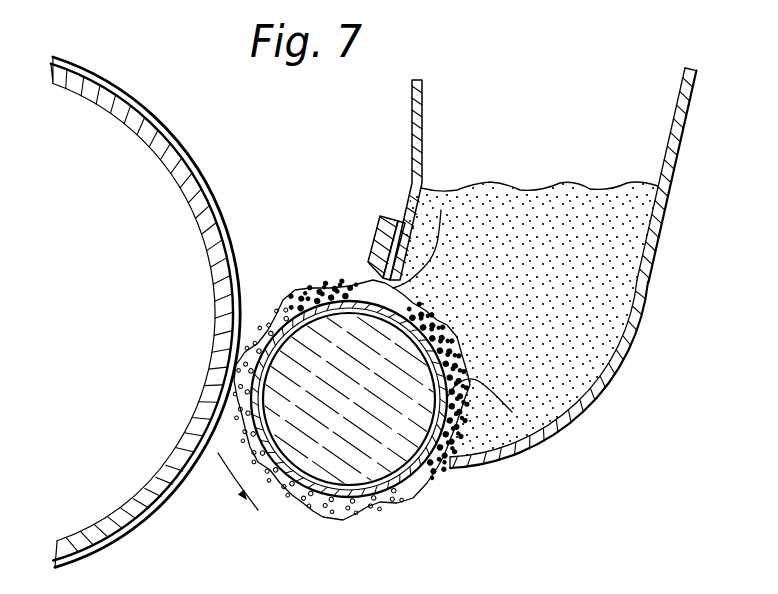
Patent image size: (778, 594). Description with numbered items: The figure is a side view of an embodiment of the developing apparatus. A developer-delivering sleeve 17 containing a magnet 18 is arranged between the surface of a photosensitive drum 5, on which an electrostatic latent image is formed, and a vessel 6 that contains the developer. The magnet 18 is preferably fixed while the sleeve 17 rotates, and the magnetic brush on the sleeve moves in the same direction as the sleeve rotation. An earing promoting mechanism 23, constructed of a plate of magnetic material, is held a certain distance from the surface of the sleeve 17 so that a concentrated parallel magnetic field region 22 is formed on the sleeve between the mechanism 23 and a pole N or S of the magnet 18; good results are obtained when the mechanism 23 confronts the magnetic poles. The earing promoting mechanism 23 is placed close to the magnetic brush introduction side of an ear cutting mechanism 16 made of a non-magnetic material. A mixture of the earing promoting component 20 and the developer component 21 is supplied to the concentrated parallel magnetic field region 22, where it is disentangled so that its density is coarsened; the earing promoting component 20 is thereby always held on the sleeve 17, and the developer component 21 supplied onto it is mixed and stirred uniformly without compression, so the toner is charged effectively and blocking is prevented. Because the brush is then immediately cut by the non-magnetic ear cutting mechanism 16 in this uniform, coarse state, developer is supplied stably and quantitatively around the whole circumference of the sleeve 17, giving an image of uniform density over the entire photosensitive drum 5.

The photosensitive drum 5 is at (95, 73).
The vessel 6 is at (645, 318).
The ear cutting mechanism 16 is at (379, 223).
The sleeve 17 is at (358, 497).
The magnet 18 is at (313, 463).
The earing promoting component 20 is at (512, 412).
The developer component 21 is at (538, 281).
The concentrated parallel magnetic field region 22 is at (441, 210).
The earing promoting mechanism 23 is at (400, 219).